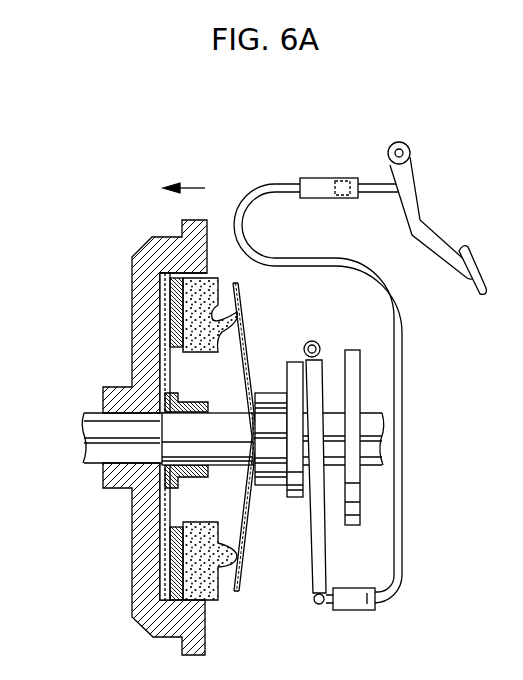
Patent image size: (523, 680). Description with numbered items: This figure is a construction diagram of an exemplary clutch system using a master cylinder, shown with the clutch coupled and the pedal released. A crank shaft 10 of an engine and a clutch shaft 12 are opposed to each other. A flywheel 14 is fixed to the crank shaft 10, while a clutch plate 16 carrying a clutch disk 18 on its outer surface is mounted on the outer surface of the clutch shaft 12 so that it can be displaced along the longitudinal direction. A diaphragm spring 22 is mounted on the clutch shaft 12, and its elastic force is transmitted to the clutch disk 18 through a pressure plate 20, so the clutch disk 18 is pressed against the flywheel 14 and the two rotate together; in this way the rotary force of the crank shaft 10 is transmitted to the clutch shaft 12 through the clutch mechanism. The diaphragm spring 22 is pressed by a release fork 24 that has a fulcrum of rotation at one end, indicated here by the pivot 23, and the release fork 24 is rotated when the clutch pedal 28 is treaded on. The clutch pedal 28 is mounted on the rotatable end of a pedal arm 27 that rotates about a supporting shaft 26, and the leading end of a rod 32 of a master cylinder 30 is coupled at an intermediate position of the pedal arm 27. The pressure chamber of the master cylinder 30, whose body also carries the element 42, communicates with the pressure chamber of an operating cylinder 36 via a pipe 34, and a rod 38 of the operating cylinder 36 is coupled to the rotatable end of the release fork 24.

The crank shaft 10 is at (96, 441).
The clutch shaft 12 is at (226, 417).
The flywheel 14 is at (132, 568).
The clutch plate 16 is at (160, 510).
The clutch disk 18 is at (160, 305).
The pressure plate 20 is at (212, 265).
The diaphragm spring 22 is at (238, 596).
The pivot 23 is at (308, 342).
The release fork 24 is at (324, 557).
The supporting shaft 26 is at (411, 151).
The pedal arm 27 is at (412, 213).
The clutch pedal 28 is at (483, 298).
The master cylinder 30 is at (313, 181).
The rod 32 is at (377, 194).
The pipe 34 is at (402, 501).
The operating cylinder 36 is at (370, 610).
The rod 38 is at (331, 607).
The sensor 42 is at (343, 180).